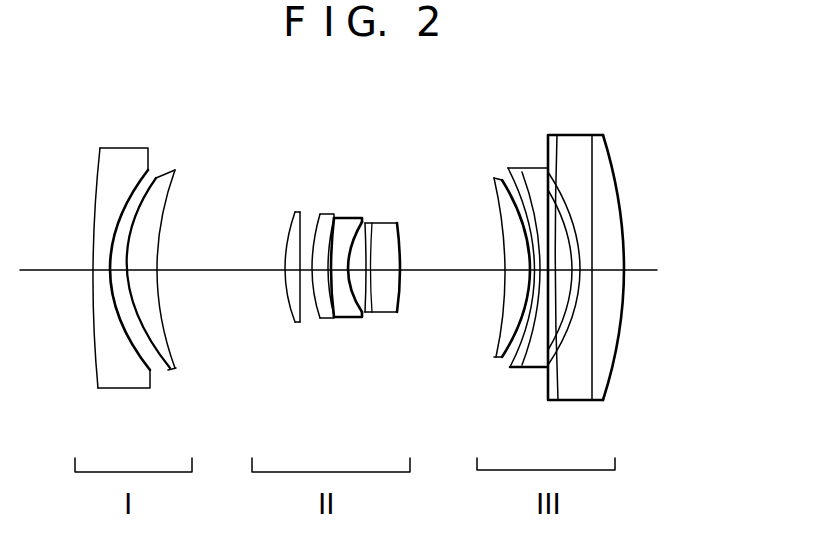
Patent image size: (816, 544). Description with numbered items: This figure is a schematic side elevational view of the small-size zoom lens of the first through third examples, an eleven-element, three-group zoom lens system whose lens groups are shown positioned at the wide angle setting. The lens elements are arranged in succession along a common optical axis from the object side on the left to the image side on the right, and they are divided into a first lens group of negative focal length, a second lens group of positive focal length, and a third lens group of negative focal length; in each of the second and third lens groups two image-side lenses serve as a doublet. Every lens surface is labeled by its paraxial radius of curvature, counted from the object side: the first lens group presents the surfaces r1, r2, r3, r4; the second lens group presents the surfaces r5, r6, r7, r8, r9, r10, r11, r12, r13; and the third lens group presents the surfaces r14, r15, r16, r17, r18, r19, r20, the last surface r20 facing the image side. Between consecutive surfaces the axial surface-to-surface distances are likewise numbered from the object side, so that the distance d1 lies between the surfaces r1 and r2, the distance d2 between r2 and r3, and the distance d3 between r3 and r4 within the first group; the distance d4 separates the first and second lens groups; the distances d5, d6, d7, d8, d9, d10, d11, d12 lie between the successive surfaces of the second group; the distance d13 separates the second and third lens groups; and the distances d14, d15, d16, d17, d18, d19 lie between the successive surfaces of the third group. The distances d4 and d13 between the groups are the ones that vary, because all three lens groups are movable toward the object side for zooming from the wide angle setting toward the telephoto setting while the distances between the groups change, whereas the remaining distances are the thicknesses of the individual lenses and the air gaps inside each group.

The paraxial radius of curvature of first lens surface r1 is at (98, 168).
The paraxial radius of curvature of second lens surface r2 is at (130, 190).
The paraxial radius of curvature of third lens surface r3 is at (158, 178).
The paraxial radius of curvature of fourth lens surface r4 is at (173, 193).
The paraxial radius of curvature of fifth lens surface r5 is at (283, 227).
The paraxial radius of curvature of sixth lens surface r6 is at (305, 225).
The paraxial radius of curvature of seventh lens surface r7 is at (315, 227).
The paraxial radius of curvature of eighth lens surface r8 is at (330, 220).
The paraxial radius of curvature of ninth lens surface r9 is at (342, 230).
The paraxial radius of curvature of tenth lens surface r10 is at (355, 230).
The paraxial radius of curvature of eleventh lens surface r11 is at (373, 233).
The paraxial radius of curvature of twelfth lens surface r12 is at (392, 230).
The paraxial radius of curvature of thirteenth lens surface r13 is at (405, 227).
The paraxial radius of curvature of fourteenth lens surface r14 is at (495, 195).
The paraxial radius of curvature of fifteenth lens surface r15 is at (502, 170).
The paraxial radius of curvature of sixteenth lens surface r16 is at (522, 187).
The paraxial radius of curvature of seventeenth lens surface r17 is at (550, 187).
The paraxial radius of curvature of eighteenth lens surface r18 is at (555, 197).
The paraxial radius of curvature of nineteenth lens surface r19 is at (603, 135).
The paraxial radius of curvature of twentieth lens surface r20 is at (618, 170).
The first surface-to-surface distance d1 is at (103, 273).
The second surface-to-surface distance d2 is at (123, 272).
The third surface-to-surface distance d3 is at (142, 272).
The fourth surface-to-surface distance d4 is at (208, 271).
The fifth surface-to-surface distance d5 is at (287, 275).
The sixth surface-to-surface distance d6 is at (306, 275).
The seventh surface-to-surface distance d7 is at (320, 320).
The eighth surface-to-surface distance d8 is at (337, 322).
The ninth surface-to-surface distance d9 is at (345, 320).
The tenth surface-to-surface distance d10 is at (372, 318).
The eleventh surface-to-surface distance d11 is at (386, 273).
The twelfth surface-to-surface distance d12 is at (374, 308).
The thirteenth surface-to-surface distance d13 is at (447, 271).
The fourteenth surface-to-surface distance d14 is at (518, 274).
The fifteenth surface-to-surface distance d15 is at (535, 276).
The sixteenth surface-to-surface distance d16 is at (532, 370).
The seventeenth surface-to-surface distance d17 is at (560, 403).
The eighteenth surface-to-surface distance d18 is at (605, 398).
The nineteenth surface-to-surface distance d19 is at (612, 273).